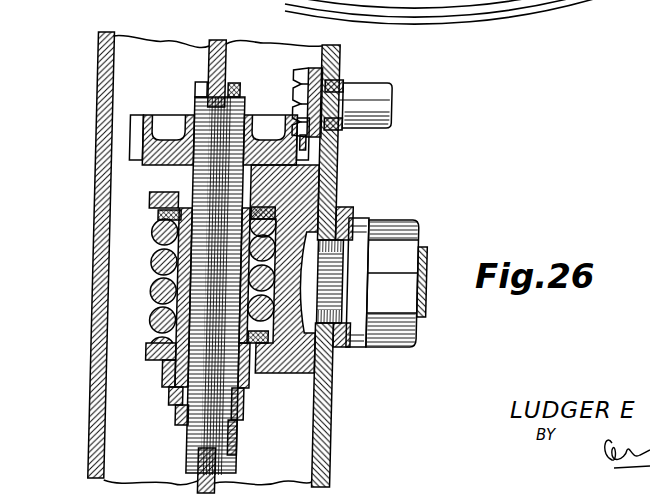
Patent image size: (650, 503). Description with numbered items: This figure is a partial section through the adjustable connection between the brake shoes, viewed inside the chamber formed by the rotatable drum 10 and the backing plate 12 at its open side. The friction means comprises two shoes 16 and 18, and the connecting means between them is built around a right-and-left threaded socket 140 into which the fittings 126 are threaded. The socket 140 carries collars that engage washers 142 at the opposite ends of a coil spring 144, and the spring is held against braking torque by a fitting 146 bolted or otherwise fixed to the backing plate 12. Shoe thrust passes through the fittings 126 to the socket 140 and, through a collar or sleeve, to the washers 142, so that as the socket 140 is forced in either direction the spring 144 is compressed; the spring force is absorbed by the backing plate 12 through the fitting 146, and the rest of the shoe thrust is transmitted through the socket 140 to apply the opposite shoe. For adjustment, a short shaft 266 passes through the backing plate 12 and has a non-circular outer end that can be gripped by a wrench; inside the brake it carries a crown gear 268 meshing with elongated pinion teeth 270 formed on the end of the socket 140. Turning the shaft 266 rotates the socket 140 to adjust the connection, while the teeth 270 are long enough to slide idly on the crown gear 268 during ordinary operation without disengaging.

The rotatable drum 10 is at (102, 177).
The backing plate 12 is at (417, 0).
The shoe 16 is at (237, 481).
The shoe 18 is at (212, 62).
The fittings 126 is at (237, 83).
The right-and-left threaded socket 140 is at (163, 127).
The washers 142 is at (272, 212).
The coil spring 144 is at (170, 263).
The fitting 146 is at (307, 220).
The short shaft 266 is at (328, 107).
The crown gear 268 is at (330, 73).
The elongated pinion teeth 270 is at (295, 156).